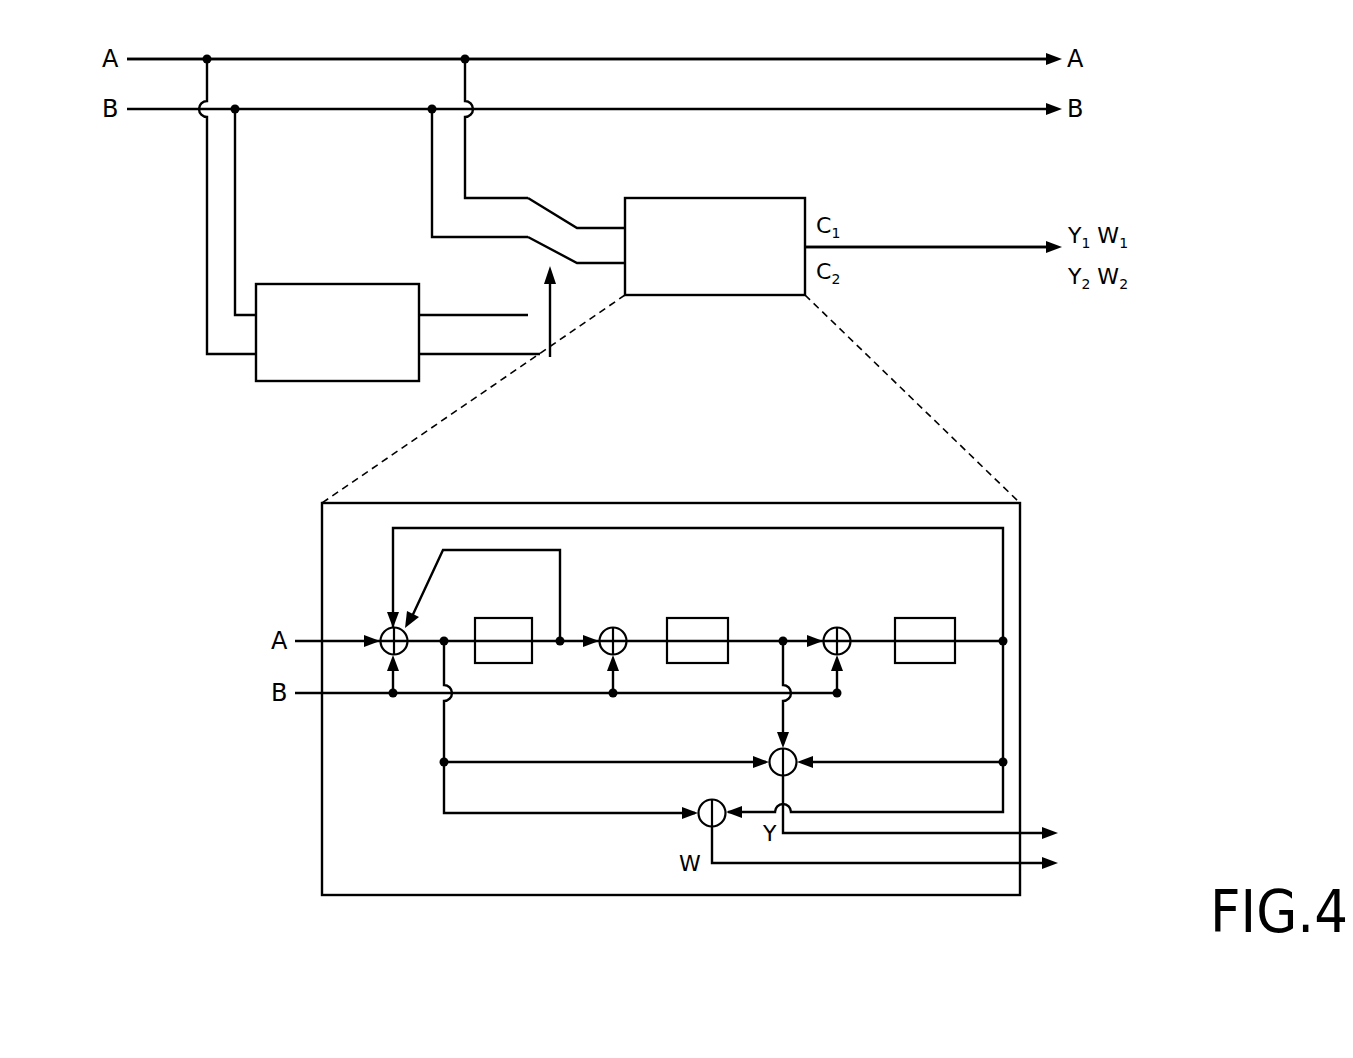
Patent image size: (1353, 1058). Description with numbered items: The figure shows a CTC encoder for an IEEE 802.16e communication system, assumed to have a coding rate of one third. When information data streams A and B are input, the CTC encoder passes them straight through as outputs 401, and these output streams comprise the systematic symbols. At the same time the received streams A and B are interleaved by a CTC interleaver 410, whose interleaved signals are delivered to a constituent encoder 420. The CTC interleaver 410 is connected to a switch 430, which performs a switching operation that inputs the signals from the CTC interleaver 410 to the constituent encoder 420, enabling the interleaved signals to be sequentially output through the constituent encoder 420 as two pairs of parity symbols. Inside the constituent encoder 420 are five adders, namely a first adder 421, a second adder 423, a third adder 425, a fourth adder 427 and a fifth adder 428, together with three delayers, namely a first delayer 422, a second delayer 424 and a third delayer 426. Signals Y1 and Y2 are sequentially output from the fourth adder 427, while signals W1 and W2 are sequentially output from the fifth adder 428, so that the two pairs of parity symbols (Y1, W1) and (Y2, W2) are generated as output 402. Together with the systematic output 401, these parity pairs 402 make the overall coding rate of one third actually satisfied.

The information data streams A and B output 401 is at (1100, 83).
The two pairs of parity symbols 402 is at (1137, 251).
The CTC interleaver 410 is at (338, 284).
The constituent encoder 420 is at (715, 198).
The first adder 421 is at (385, 627).
The first delayer 422 is at (502, 618).
The second adder 423 is at (613, 627).
The second delayer 424 is at (697, 618).
The third adder 425 is at (837, 627).
The third delayer 426 is at (927, 618).
The fourth adder 427 is at (797, 750).
The fifth adder 428 is at (701, 800).
The switch 430 is at (576, 304).